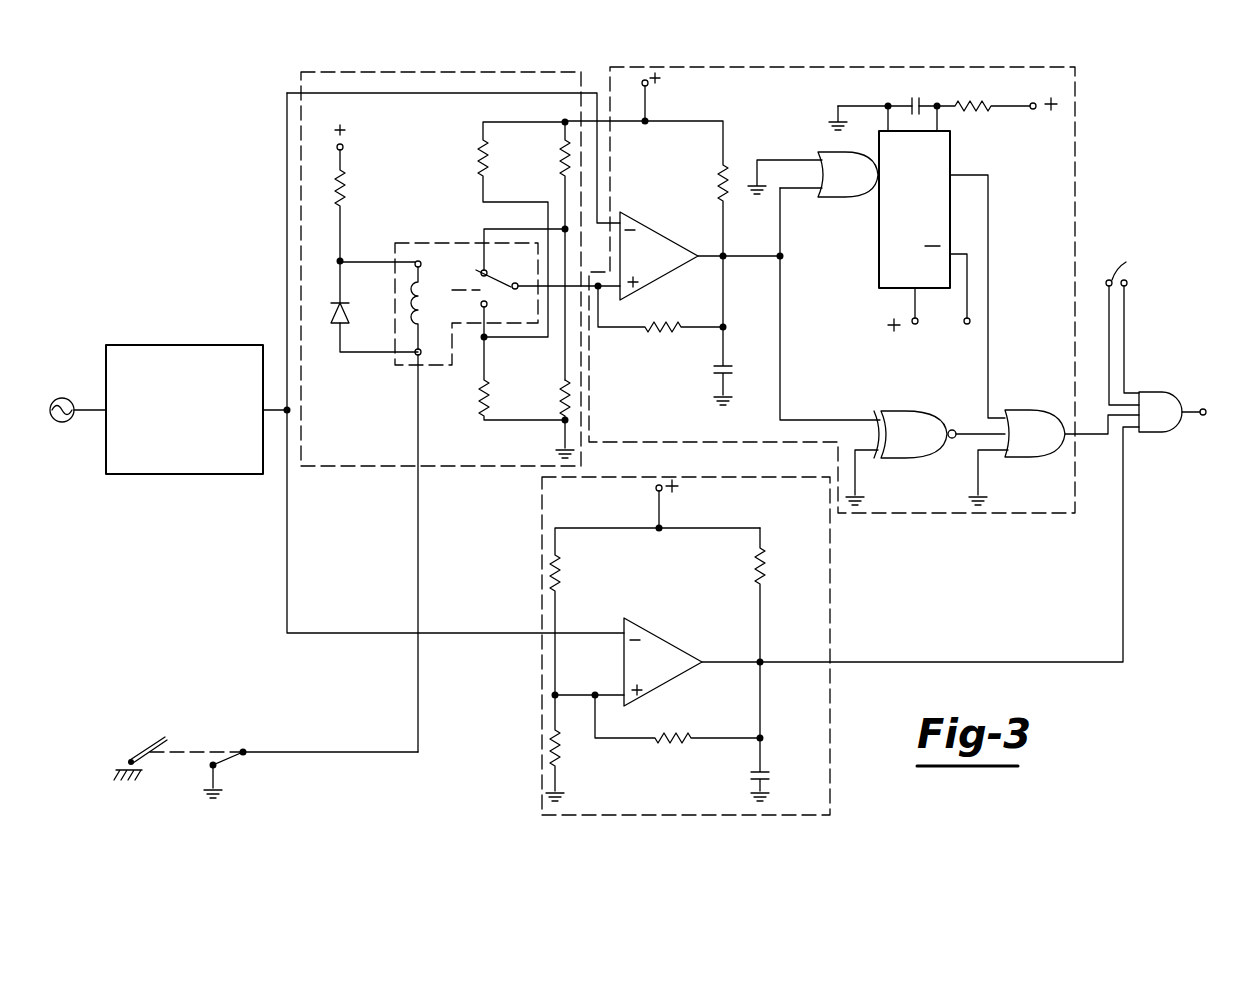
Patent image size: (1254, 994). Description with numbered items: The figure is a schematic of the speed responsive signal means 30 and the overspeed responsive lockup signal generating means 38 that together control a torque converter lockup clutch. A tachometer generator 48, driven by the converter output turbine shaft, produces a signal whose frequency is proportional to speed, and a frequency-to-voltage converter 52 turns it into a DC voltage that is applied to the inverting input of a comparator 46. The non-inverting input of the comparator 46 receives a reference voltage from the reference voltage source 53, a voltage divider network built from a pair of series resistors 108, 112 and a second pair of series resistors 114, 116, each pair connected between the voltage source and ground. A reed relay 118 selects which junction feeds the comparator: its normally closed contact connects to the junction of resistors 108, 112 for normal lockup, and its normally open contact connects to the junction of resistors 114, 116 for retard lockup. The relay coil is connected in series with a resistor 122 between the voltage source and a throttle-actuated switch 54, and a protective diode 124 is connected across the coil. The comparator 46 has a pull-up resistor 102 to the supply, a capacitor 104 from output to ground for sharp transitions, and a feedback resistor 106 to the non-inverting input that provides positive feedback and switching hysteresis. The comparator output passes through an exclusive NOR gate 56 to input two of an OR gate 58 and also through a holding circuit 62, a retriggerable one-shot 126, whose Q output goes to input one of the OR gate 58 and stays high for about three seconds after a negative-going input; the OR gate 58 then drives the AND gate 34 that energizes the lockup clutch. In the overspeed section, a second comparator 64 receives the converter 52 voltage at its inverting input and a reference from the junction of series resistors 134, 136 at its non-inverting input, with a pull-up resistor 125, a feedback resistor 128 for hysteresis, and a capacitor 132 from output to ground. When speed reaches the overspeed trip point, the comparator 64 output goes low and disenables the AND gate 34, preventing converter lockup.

The tachometer generator 48 is at (82, 374).
The frequency-to-voltage converter 52 is at (212, 312).
The reference voltage source 53 is at (424, 66).
The switch 54 is at (243, 749).
The speed responsive signal means 30 is at (764, 64).
The overspeed responsive lockup signal generating means 38 is at (536, 668).
The AND gate 34 is at (1193, 340).
The comparator 46 is at (698, 207).
The exclusive NOR gate 56 is at (898, 460).
The OR gate 58 is at (1020, 459).
The holding circuit 62 is at (852, 216).
The comparator 64 is at (694, 612).
The pull-up resistor 102 is at (720, 175).
The capacitor 104 is at (716, 375).
The feedback resistor 106 is at (648, 330).
The resistor 108 is at (562, 156).
The resistor 112 is at (569, 400).
The resistor 114 is at (480, 156).
The resistor 116 is at (482, 402).
The reed relay 118 is at (462, 225).
The resistor 122 is at (345, 206).
The protective diode 124 is at (331, 322).
The pull-up resistor 125 is at (765, 568).
The one-shot 126 is at (955, 158).
The feedback resistor 128 is at (662, 745).
The capacitor 132 is at (763, 773).
The resistor 134 is at (560, 578).
The resistor 136 is at (548, 742).